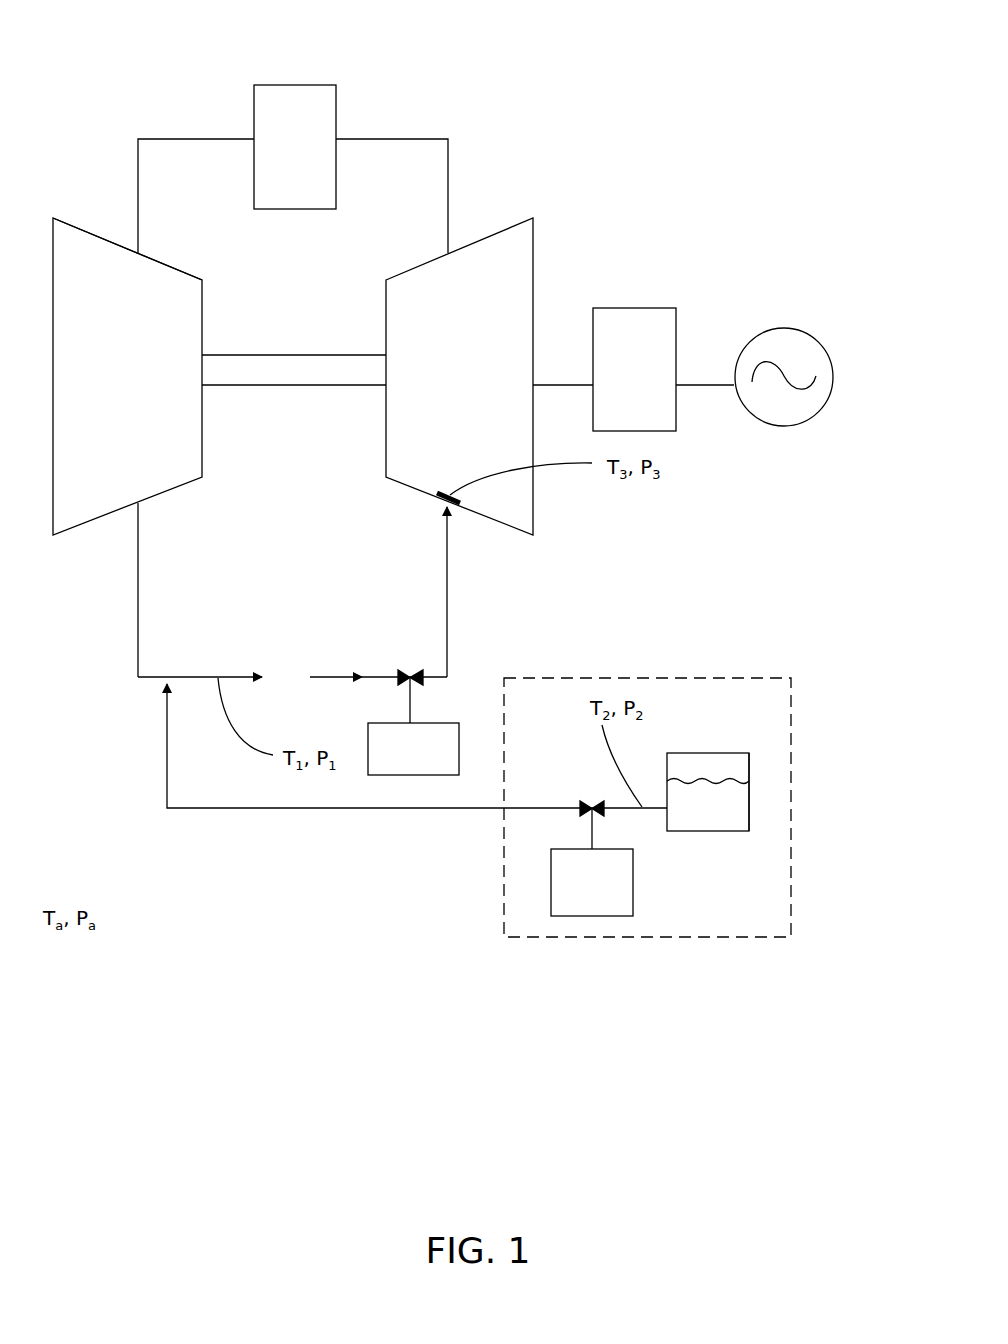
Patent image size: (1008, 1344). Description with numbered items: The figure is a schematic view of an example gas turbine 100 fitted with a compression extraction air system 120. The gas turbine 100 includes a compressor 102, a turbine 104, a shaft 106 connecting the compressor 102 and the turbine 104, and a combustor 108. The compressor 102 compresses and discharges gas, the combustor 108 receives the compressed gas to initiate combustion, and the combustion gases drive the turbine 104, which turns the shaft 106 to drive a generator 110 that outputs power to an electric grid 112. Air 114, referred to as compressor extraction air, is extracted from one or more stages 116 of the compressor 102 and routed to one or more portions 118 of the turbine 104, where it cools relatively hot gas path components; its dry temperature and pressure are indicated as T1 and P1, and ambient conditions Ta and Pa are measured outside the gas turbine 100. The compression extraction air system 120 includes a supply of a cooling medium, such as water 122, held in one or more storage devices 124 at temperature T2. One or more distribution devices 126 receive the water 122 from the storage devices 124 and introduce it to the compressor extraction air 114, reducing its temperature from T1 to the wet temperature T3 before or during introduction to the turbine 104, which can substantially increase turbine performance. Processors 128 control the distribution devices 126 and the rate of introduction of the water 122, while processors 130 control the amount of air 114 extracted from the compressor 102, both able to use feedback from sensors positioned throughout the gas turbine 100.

The gas turbine 100 is at (90, 57).
The compressor 102 is at (127, 376).
The turbine 104 is at (459, 376).
The shaft 106 is at (270, 355).
The combustor 108 is at (293, 169).
The generator 110 is at (633, 369).
The electric grid 112 is at (813, 337).
The air 114 is at (292, 677).
The stages 116 is at (138, 548).
The portions 118 is at (447, 537).
The compression extraction air system 120 is at (593, 678).
The water 122 is at (708, 792).
The storage devices 124 is at (749, 766).
The distribution devices 126 is at (462, 505).
The processors 128 is at (592, 858).
The processors 130 is at (413, 722).